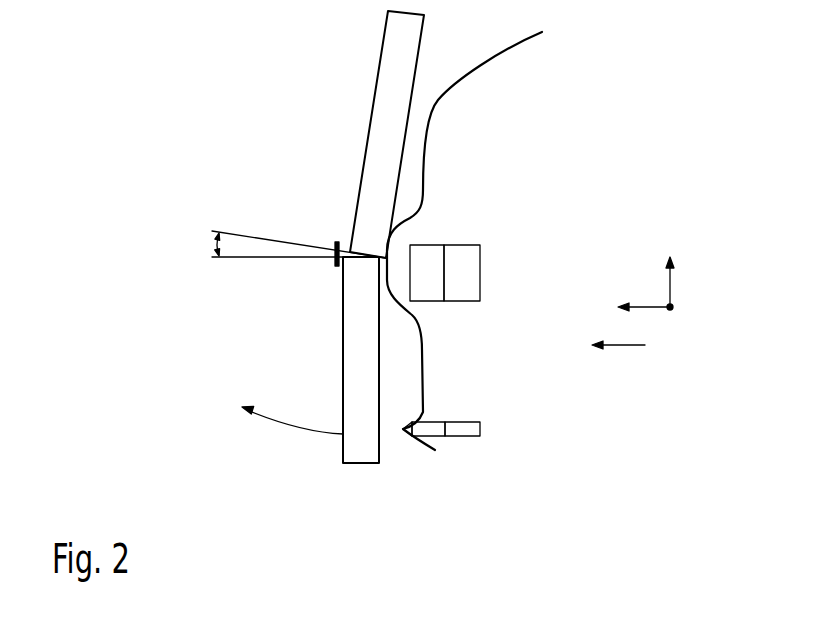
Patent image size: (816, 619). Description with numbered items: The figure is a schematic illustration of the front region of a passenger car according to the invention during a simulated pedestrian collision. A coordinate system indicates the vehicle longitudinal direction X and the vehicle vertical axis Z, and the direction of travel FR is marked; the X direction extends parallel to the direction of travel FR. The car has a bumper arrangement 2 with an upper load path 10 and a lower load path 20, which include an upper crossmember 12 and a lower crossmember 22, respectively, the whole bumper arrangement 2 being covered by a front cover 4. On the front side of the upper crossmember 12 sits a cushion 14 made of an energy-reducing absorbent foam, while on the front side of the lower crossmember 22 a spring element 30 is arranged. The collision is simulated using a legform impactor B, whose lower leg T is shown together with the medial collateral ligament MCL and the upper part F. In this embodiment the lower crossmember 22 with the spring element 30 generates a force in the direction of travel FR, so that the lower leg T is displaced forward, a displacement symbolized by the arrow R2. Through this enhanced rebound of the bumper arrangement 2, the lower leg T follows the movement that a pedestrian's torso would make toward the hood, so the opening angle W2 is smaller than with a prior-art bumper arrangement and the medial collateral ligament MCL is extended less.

The bumper arrangement 2 is at (480, 497).
The front cover 4 is at (423, 453).
The upper load path 10 is at (504, 241).
The upper crossmember 12 is at (470, 245).
The cushion 14 is at (433, 245).
The lower load path 20 is at (494, 427).
The lower crossmember 22 is at (468, 430).
The spring element 30 is at (433, 428).
The front flap F is at (377, 80).
The lower leg T is at (343, 355).
The medial collateral ligament MCL is at (336, 241).
The opening angle W2 is at (216, 244).
The arrow R2 is at (300, 421).
The legform impactor B is at (298, 458).
The vehicle vertical axis Z is at (670, 265).
The vehicle longitudinal direction X is at (637, 308).
The direction of travel FR is at (632, 346).